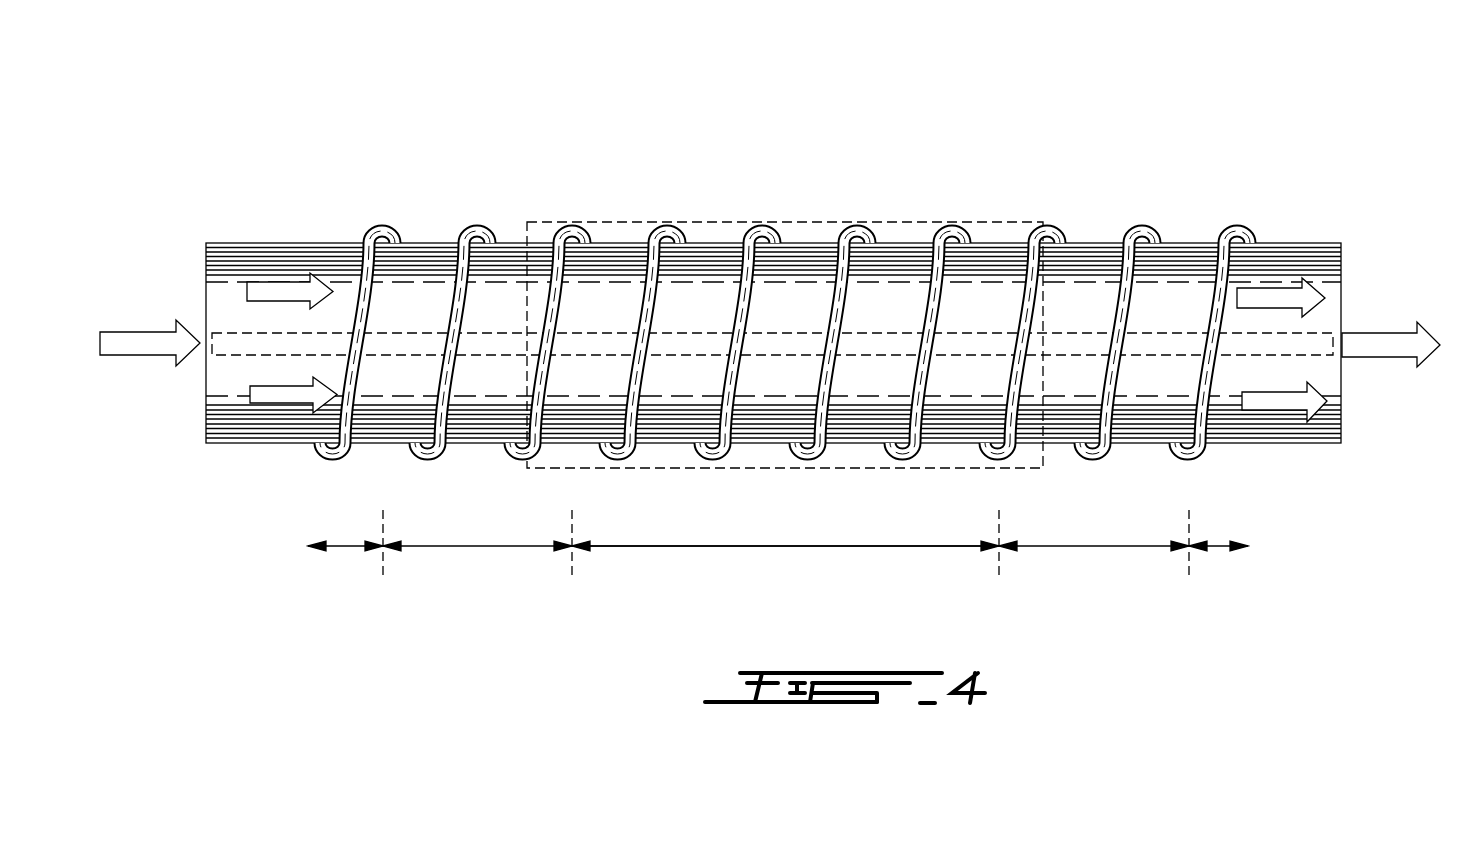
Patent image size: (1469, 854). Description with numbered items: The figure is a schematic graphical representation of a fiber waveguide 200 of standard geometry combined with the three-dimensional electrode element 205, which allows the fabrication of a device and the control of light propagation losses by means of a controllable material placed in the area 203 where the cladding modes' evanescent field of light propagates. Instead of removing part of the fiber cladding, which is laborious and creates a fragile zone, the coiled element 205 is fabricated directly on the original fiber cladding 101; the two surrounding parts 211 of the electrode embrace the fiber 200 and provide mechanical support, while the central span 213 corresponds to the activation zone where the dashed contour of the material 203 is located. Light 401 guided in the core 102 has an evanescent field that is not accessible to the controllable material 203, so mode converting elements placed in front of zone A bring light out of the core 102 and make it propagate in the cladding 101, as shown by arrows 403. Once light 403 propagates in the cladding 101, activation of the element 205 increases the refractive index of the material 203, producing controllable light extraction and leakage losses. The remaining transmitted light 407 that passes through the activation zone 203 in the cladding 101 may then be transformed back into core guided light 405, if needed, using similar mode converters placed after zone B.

The fiber cladding 101 is at (220, 423).
The core 102 is at (226, 343).
The fiber waveguide 200 is at (1099, 218).
The controllable material 203 is at (762, 222).
The 3DTEMD element 205 is at (390, 230).
The surrounding parts 211 is at (782, 552).
The central region length 213 is at (785, 570).
The light guided in the core 401 is at (138, 345).
The light propagating in the cladding 403 is at (272, 397).
The core guided light 405 is at (1373, 343).
The remaining transmitted light 407 is at (1273, 402).